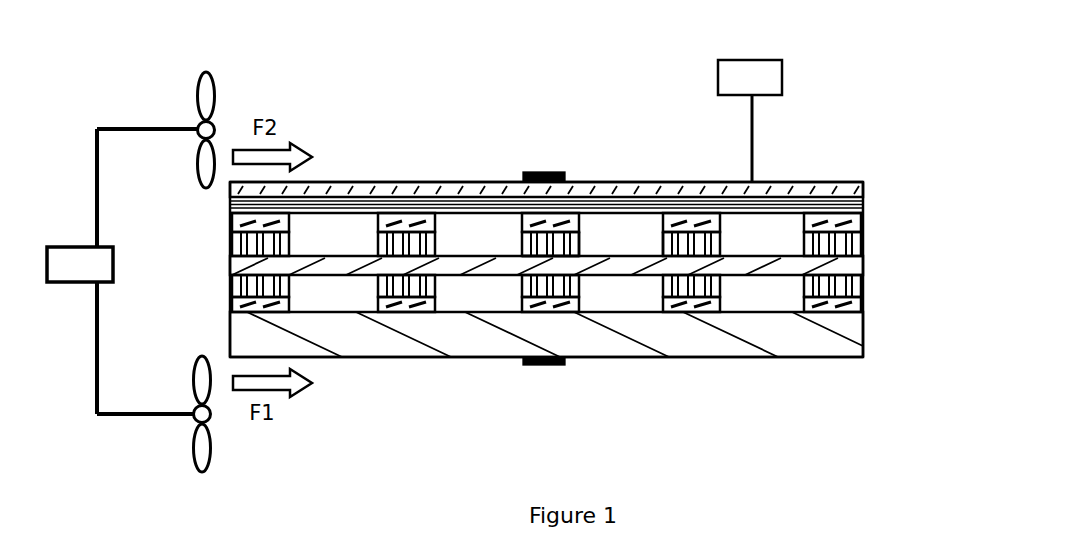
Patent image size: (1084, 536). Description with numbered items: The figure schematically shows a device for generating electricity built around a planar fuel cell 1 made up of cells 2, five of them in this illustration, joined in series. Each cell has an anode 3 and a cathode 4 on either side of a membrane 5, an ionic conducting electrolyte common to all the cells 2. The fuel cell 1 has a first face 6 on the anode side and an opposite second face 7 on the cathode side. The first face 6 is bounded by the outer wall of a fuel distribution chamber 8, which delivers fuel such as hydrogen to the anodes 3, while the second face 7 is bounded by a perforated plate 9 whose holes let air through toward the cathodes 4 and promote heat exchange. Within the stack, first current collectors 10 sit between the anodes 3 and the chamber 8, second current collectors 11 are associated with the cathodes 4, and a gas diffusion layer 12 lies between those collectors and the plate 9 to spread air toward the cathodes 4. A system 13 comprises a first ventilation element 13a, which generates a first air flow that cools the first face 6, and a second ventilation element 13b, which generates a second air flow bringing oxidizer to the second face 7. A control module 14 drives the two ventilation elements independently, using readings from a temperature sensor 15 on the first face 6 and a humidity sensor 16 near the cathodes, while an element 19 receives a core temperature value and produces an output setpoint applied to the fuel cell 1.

The planar fuel cell 1 is at (594, 240).
The cells 2 is at (600, 226).
The anode 3 is at (546, 352).
The cathode 4 is at (525, 240).
The membrane 5 is at (850, 265).
The first face 6 is at (755, 375).
The second face 7 is at (438, 172).
The fuel distribution chamber 8 is at (800, 347).
The perforated plate 9 is at (587, 137).
The first current collectors 10 is at (522, 304).
The second current collectors 11 is at (578, 266).
The gas diffusion layer 12 is at (850, 208).
The system 13 is at (219, 276).
The first ventilation element 13a is at (268, 427).
The second ventilation element 13b is at (215, 130).
The control module 14 is at (64, 254).
The temperature sensor 15 is at (545, 365).
The humidity sensor 16 is at (543, 172).
The element configured to adapt the output 19 is at (752, 72).